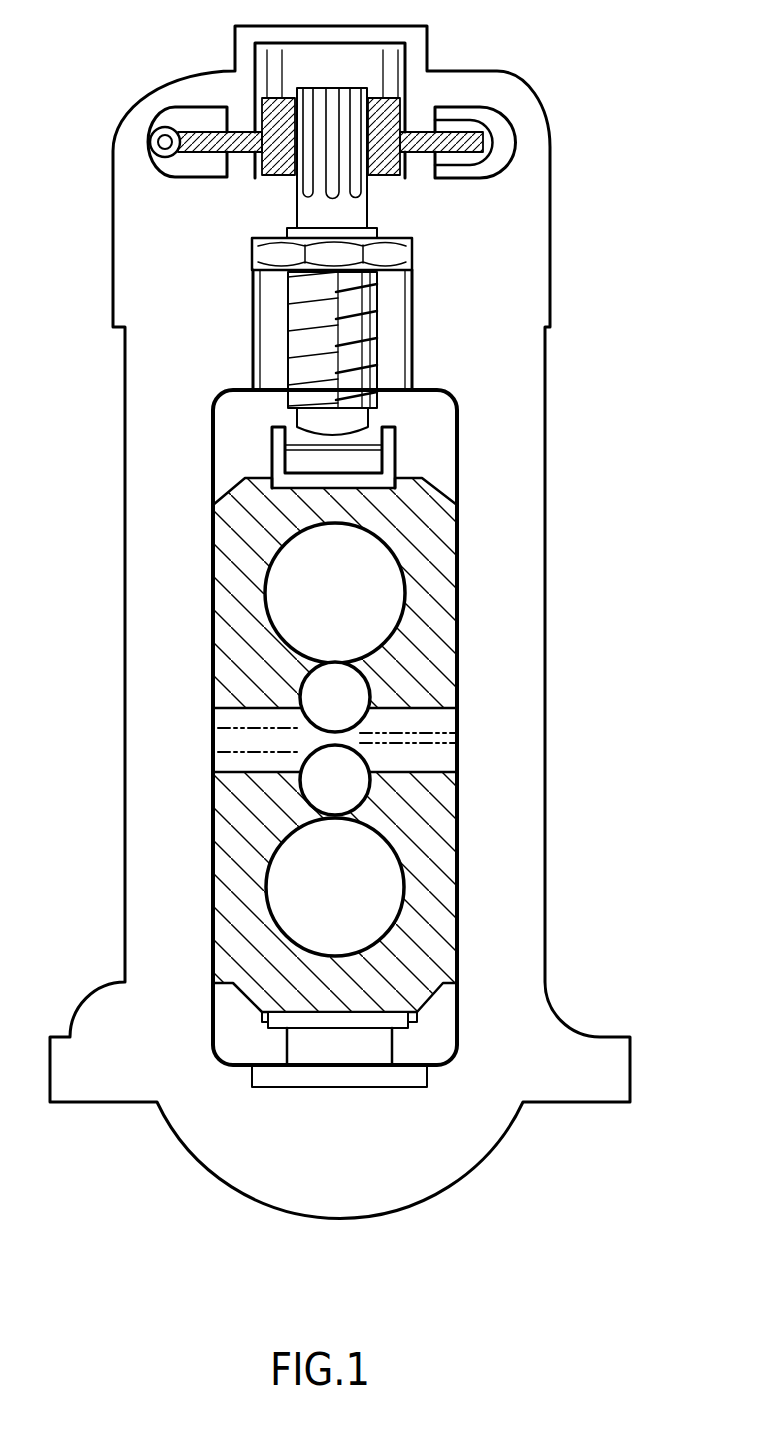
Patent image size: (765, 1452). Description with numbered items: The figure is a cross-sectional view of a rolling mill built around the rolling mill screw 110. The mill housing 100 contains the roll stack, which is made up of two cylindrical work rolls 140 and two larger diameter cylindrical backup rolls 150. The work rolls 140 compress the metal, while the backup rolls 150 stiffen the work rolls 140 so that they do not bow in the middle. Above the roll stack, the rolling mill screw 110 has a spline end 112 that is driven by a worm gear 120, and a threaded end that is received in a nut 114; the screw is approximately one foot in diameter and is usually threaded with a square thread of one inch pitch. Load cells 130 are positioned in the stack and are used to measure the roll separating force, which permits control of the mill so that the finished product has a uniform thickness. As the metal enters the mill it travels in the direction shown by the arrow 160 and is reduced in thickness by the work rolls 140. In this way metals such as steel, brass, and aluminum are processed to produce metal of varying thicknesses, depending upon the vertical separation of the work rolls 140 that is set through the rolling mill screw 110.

The mill housing 100 is at (543, 96).
The rolling mill screw 110 is at (385, 317).
The spline end 112 is at (368, 204).
The nut 114 is at (270, 262).
The worm gear 120 is at (153, 158).
The load cells 130 is at (285, 457).
The work rolls 140 is at (370, 717).
The backup rolls 150 is at (404, 580).
The arrow 160 is at (197, 737).